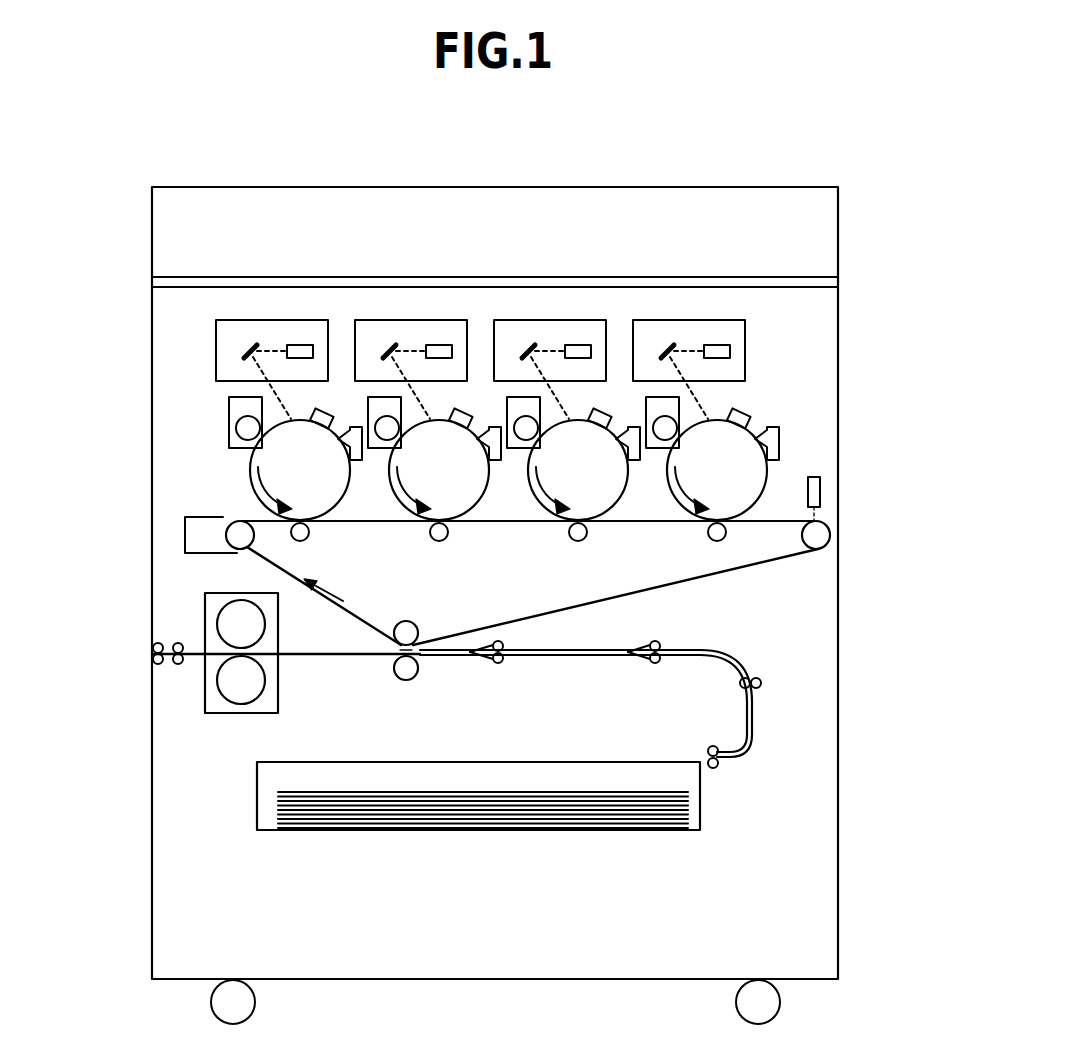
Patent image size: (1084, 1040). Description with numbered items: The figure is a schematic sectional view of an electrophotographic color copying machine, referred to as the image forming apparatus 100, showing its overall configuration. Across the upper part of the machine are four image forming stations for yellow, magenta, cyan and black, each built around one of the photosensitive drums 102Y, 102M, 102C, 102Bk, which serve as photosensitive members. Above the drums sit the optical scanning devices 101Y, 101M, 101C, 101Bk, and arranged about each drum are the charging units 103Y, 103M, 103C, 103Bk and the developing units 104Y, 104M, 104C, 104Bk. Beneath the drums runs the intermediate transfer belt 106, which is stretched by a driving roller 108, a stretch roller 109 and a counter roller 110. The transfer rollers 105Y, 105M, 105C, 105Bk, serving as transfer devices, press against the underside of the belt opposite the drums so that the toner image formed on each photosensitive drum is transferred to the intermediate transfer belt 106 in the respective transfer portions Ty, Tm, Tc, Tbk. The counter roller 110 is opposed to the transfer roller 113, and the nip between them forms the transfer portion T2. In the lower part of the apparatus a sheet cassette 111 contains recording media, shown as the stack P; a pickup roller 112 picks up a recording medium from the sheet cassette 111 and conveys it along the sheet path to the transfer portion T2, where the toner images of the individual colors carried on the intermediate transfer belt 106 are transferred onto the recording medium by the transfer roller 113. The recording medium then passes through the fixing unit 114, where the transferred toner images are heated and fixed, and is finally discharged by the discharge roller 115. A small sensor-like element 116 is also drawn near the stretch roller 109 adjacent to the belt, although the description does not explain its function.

The image forming apparatus 100 is at (842, 672).
The optical scanning device 101Y is at (243, 319).
The optical scanning device 101M is at (384, 319).
The optical scanning device 101C is at (524, 319).
The optical scanning device 101Bk is at (676, 319).
The photosensitive drum 102Y is at (258, 463).
The photosensitive drum 102M is at (395, 512).
The photosensitive drum 102C is at (534, 512).
The photosensitive drum 102Bk is at (673, 512).
The charging unit 103Y is at (316, 408).
The charging unit 103M is at (455, 408).
The charging unit 103C is at (594, 408).
The charging unit 103Bk is at (742, 408).
The developing unit 104Y is at (229, 418).
The developing unit 104M is at (367, 415).
The developing unit 104C is at (506, 415).
The developing unit 104Bk is at (645, 415).
The transfer roller 105Y is at (292, 540).
The transfer roller 105M is at (441, 541).
The transfer roller 105C is at (580, 541).
The transfer roller 105Bk is at (719, 541).
The intermediate transfer belt 106 is at (785, 558).
The driving roller 108 is at (238, 540).
The stretch roller 109 is at (818, 536).
The counter roller 110 is at (394, 633).
The sheet cassette 111 is at (702, 803).
The pickup roller 112 is at (716, 747).
The transfer roller 113 is at (406, 681).
The fixing unit 114 is at (278, 703).
The discharge roller 115 is at (152, 655).
The sensor 116 is at (822, 492).
The transfer portion Ty is at (297, 517).
The transfer portion Tm is at (432, 523).
The transfer portion Tc is at (572, 523).
The transfer portion Tbk is at (712, 523).
The transfer portion T2 is at (395, 660).
The recording sheet P is at (530, 791).